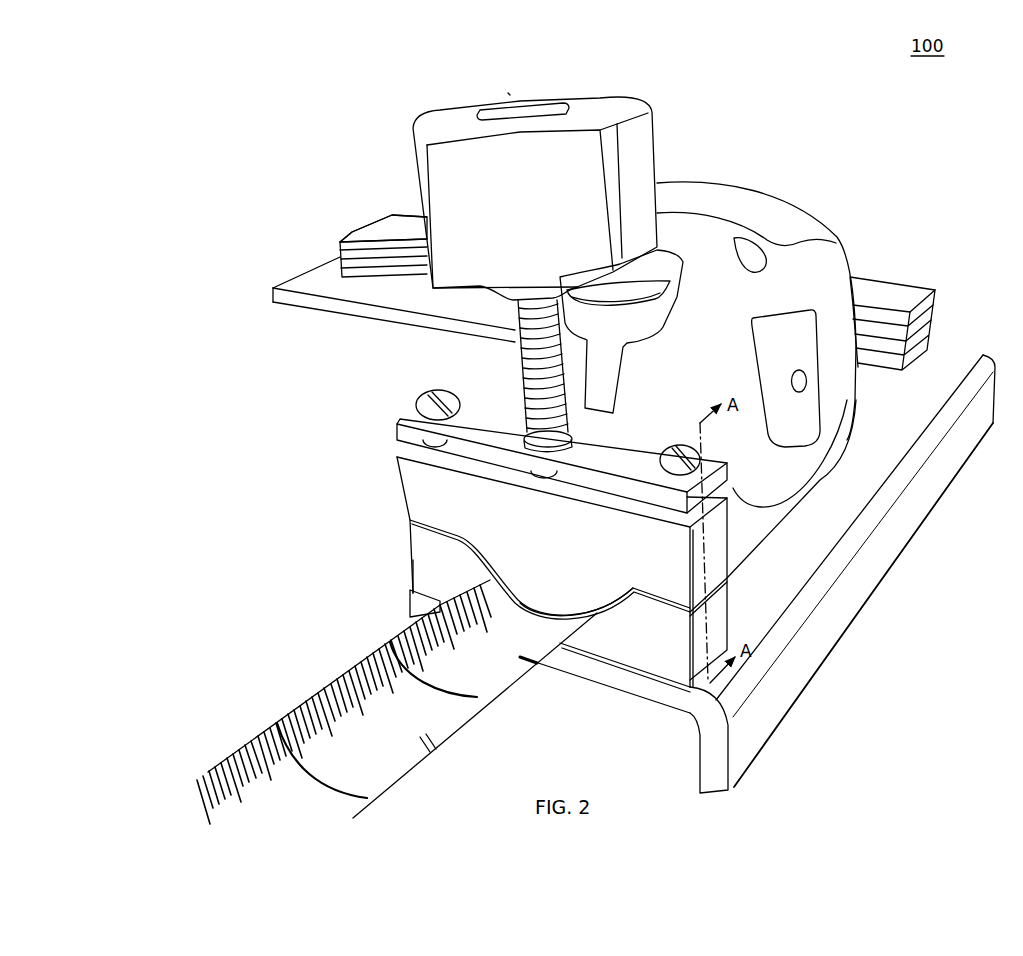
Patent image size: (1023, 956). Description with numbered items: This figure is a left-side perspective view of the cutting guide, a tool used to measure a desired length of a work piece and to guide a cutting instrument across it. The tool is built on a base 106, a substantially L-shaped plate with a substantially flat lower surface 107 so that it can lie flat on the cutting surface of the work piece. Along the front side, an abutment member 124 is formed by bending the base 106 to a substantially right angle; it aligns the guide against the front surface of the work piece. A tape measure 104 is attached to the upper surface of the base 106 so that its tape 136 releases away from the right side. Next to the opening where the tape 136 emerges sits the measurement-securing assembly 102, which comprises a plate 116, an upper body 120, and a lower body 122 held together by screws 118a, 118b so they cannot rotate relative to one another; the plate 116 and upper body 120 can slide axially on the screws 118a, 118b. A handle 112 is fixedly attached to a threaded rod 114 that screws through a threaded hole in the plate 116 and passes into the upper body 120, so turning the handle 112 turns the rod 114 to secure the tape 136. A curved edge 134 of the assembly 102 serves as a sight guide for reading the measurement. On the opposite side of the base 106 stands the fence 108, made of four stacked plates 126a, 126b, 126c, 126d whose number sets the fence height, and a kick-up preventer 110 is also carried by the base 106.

The measurement-securing assembly 102 is at (508, 92).
The tape measure 104 is at (789, 176).
The base 106 is at (283, 276).
The lower surface 107 is at (637, 694).
The fence 108 is at (333, 240).
The kick-up preventer 110 is at (369, 213).
The handle 112 is at (432, 120).
The threaded rod 114 is at (513, 372).
The plate 116 is at (397, 418).
The screw 118a is at (433, 393).
The screw 118b is at (683, 445).
The upper body 120 is at (400, 484).
The lower body 122 is at (412, 537).
The abutment member 124 is at (708, 770).
The plate 126a is at (935, 294).
The plate 126b is at (930, 312).
The plate 126c is at (928, 328).
The plate 126d is at (927, 340).
The curved edge 134 is at (526, 610).
The tape 136 is at (318, 695).